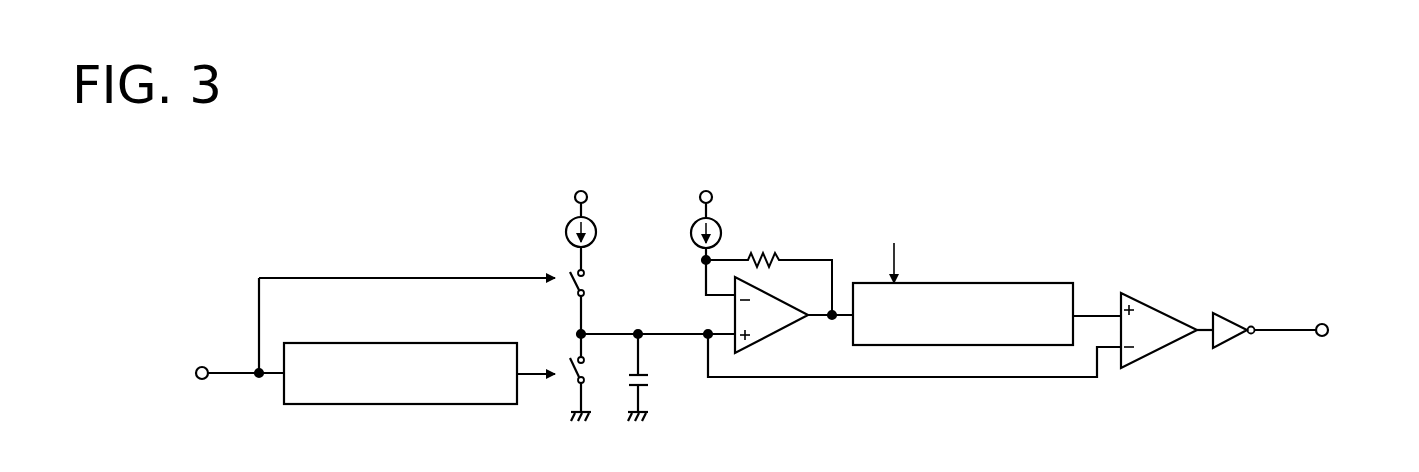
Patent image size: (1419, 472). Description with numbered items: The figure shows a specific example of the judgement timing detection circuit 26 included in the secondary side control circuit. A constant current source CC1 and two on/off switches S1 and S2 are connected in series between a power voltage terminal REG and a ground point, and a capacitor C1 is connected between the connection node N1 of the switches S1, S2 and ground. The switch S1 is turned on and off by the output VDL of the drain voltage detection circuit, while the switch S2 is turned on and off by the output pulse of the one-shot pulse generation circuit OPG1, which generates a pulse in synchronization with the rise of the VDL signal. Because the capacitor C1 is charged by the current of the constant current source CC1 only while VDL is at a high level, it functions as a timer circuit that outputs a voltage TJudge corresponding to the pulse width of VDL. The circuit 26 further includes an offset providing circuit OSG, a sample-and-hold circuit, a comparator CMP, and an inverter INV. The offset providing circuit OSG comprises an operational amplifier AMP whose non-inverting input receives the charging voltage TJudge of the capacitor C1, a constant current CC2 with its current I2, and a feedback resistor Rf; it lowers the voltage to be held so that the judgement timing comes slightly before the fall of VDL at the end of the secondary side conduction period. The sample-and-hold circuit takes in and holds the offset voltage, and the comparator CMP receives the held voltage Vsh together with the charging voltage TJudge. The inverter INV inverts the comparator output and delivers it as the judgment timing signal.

The judgement timing detection circuit 26 is at (969, 118).
The one-shot pulse generation circuit OPG1 is at (473, 405).
The output of the second drain voltage detection circuit VDL is at (375, 343).
The constant current source CC1 is at (595, 228).
The power voltage terminal REG is at (581, 183).
The on/off switch S1 is at (584, 285).
The on/off switch S2 is at (584, 372).
The connection node N1 is at (578, 333).
The charging voltage TJudge is at (658, 323).
The capacitor C1 is at (648, 380).
The offset providing circuit OSG is at (833, 163).
The constant current CC2 is at (717, 220).
The current I2 is at (714, 233).
The feedback resistor Rf is at (769, 273).
The operational amplifier AMP is at (775, 337).
The held voltage Vsh is at (1097, 304).
The comparator CMP is at (1155, 352).
The inverter INV is at (1227, 317).